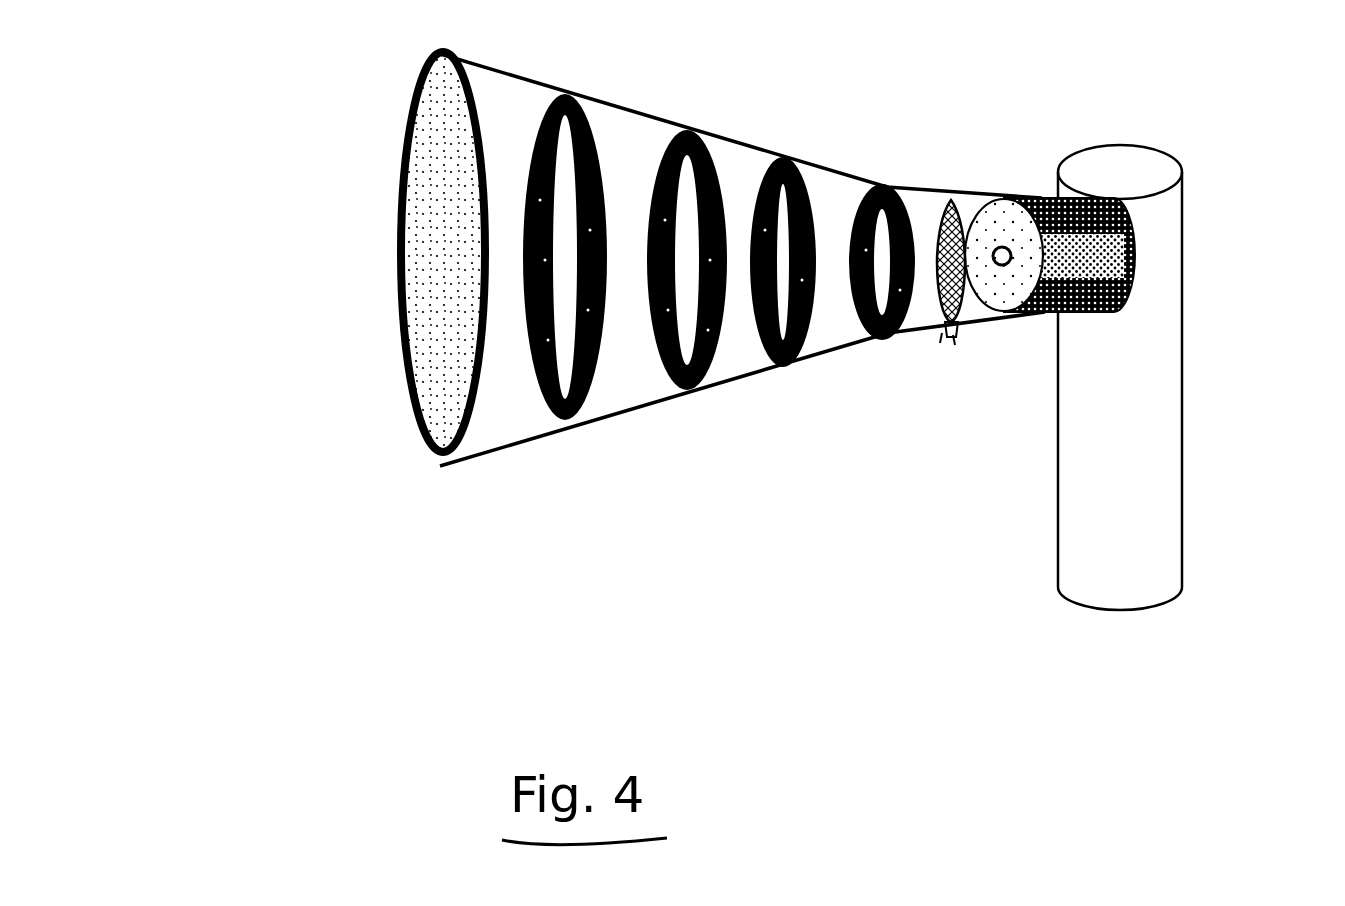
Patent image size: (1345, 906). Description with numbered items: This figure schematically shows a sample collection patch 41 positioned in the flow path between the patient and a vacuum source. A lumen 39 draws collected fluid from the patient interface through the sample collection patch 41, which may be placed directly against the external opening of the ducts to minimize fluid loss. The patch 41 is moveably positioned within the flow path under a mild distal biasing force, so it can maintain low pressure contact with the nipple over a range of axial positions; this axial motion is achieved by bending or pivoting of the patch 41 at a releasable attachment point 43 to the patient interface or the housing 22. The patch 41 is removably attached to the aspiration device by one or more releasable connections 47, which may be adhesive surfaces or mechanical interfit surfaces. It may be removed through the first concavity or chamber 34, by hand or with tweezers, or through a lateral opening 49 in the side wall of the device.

The housing 22 is at (1163, 357).
The first concavity or chamber 34 is at (653, 335).
The lumen 39 is at (1005, 247).
The sample collection patch 41 is at (937, 233).
The releasable attachment point 43 is at (962, 330).
The releasable connection 47 is at (955, 337).
The lateral opening 49 is at (941, 335).